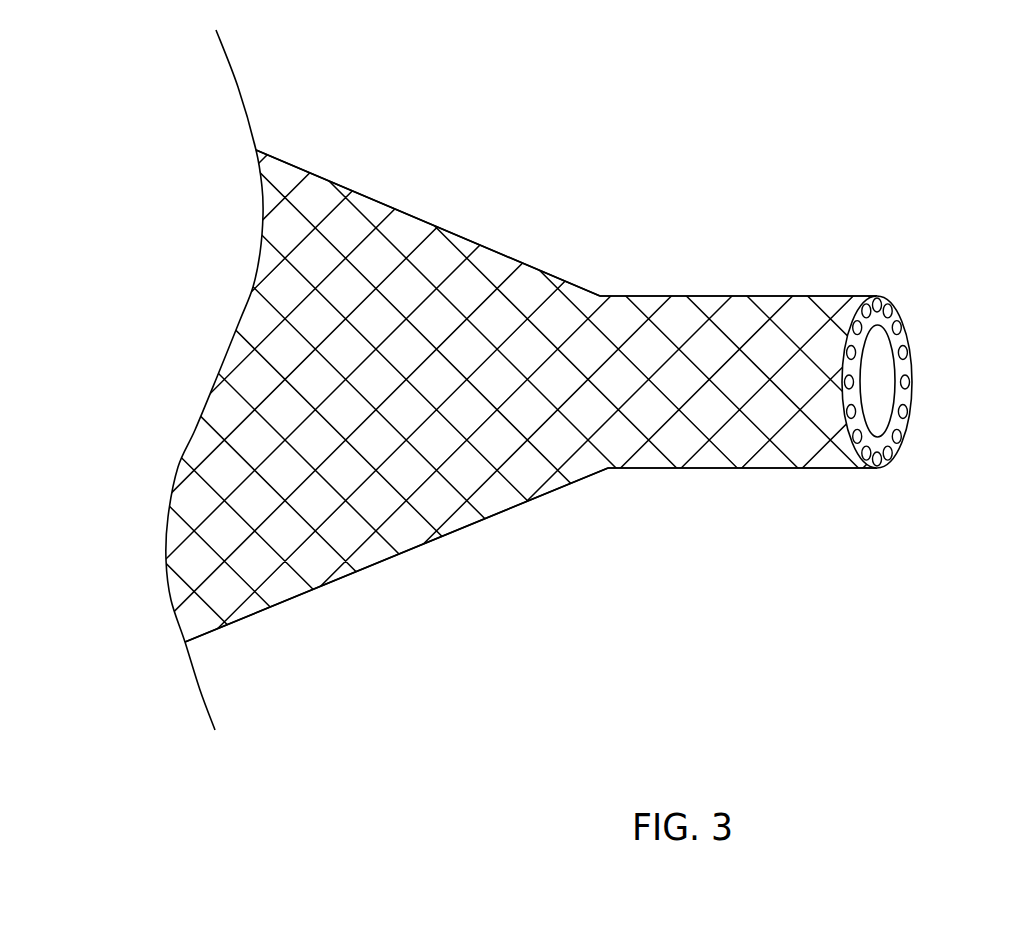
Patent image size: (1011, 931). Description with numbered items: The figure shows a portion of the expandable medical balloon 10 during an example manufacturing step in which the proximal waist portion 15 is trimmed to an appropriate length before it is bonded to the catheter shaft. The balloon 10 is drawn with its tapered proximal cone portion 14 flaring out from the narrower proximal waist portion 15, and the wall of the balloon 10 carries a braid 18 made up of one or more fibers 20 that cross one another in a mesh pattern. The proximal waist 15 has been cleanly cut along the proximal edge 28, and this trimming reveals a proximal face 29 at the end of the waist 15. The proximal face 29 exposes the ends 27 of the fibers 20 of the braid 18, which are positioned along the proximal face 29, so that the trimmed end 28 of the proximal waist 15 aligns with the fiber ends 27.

The expandable medical balloon 10 is at (534, 142).
The proximal cone portion 14 is at (360, 192).
The proximal waist portion 15 is at (707, 282).
The braid 18 is at (298, 148).
The fibers 20 is at (405, 502).
The ends of fibers 27 is at (878, 297).
The proximal edge 28 is at (879, 486).
The proximal face 29 is at (892, 328).